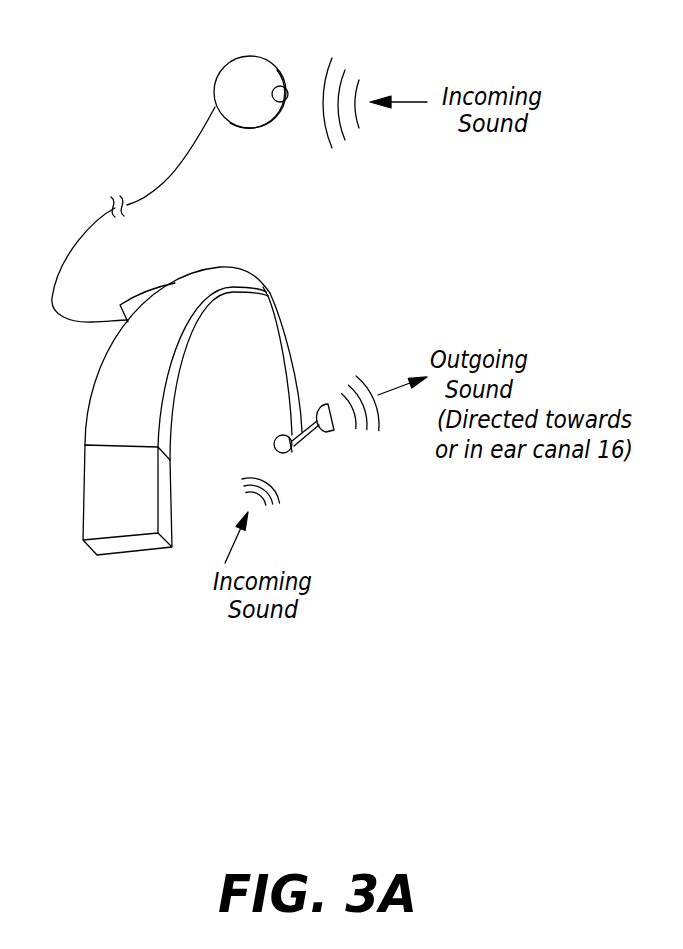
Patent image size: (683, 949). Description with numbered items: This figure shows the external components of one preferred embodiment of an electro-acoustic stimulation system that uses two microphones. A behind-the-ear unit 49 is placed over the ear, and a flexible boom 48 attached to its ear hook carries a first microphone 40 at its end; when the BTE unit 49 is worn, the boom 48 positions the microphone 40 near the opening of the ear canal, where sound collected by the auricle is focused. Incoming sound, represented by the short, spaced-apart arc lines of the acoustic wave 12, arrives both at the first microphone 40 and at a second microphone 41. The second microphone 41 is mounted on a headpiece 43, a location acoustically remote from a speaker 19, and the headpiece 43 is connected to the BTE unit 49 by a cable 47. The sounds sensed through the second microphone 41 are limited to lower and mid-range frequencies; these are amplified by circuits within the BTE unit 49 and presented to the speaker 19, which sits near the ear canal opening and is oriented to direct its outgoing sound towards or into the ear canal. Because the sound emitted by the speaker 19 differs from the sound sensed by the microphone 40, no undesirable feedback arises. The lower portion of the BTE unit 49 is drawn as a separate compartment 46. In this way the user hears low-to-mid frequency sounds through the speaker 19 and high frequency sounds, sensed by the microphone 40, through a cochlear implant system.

The acoustic pressure wave 12 is at (360, 104).
The speaker 19 is at (333, 432).
The first microphone 40 is at (293, 453).
The second microphone 41 is at (284, 88).
The headpiece 43 is at (249, 57).
The battery compartment 46 is at (83, 497).
The cable 47 is at (163, 185).
The flexible boom 48 is at (300, 357).
The behind-the-ear unit 49 is at (98, 387).